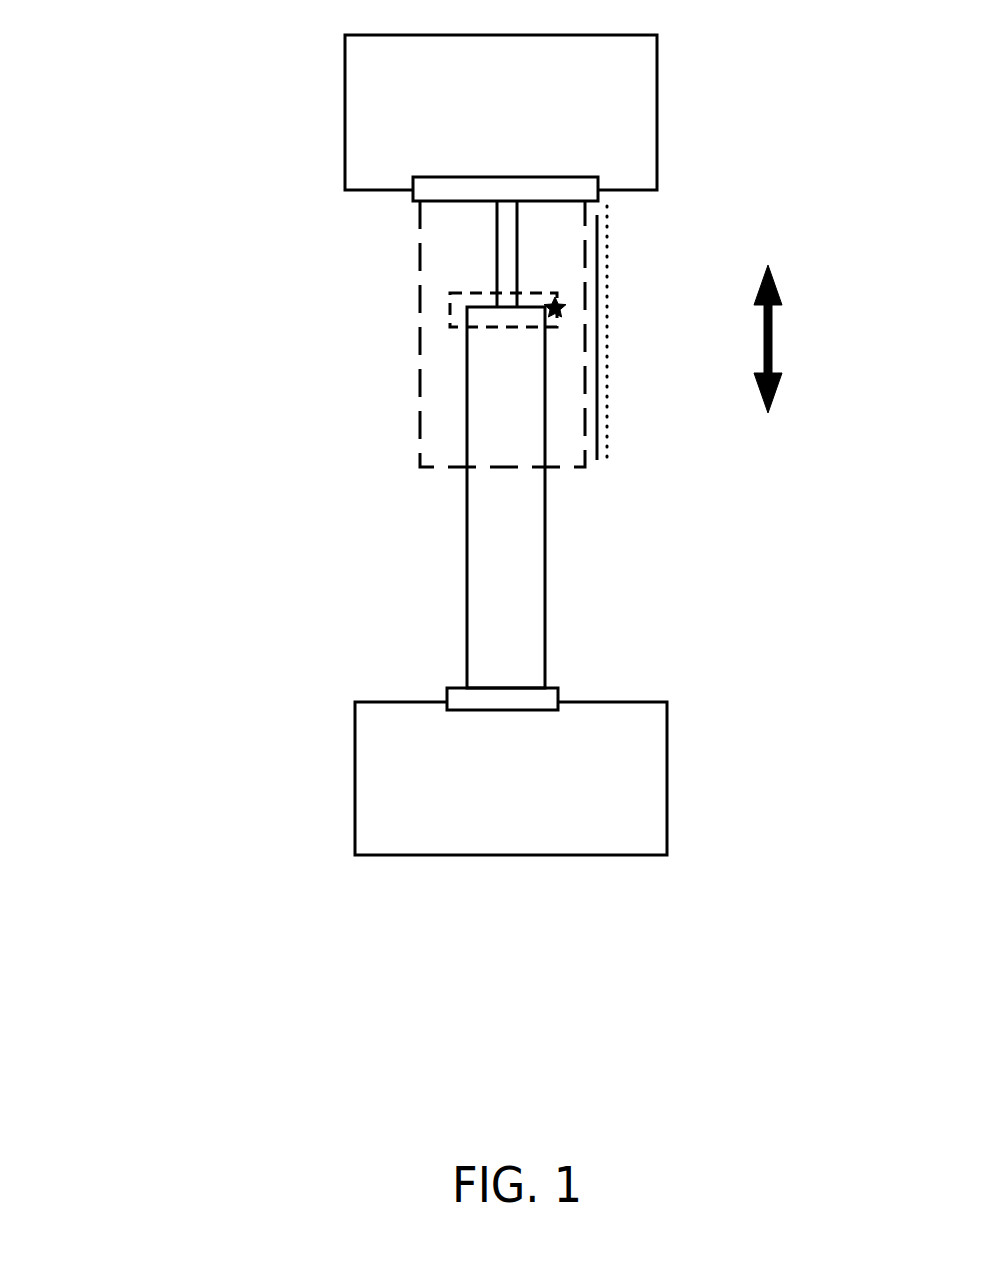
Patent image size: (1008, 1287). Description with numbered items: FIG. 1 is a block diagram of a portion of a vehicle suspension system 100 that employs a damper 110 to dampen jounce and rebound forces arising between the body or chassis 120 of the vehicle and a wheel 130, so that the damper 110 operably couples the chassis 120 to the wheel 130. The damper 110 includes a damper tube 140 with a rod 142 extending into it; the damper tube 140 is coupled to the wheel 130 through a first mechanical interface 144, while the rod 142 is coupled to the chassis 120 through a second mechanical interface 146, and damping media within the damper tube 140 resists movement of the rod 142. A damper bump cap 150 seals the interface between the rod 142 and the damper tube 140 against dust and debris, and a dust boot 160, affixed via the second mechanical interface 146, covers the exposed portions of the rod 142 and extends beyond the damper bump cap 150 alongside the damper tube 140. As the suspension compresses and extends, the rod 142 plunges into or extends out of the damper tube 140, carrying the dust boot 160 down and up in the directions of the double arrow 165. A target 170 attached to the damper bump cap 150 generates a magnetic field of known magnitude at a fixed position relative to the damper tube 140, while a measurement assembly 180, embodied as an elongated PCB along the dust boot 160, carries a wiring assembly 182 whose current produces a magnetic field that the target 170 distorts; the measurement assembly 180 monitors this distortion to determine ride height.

The vehicle suspension system 100 is at (186, 967).
The damper 110 is at (415, 512).
The body or chassis 120 is at (657, 123).
The wheel 130 is at (667, 785).
The damper tube 140 is at (547, 633).
The rod 142 is at (500, 235).
The first mechanical interface 144 is at (558, 695).
The second mechanical interface 146 is at (543, 177).
The damper bump cap 150 is at (450, 327).
The dust boot 160 is at (418, 397).
The double arrow 165 is at (772, 323).
The target 170 is at (562, 302).
The measurement assembly 180 is at (608, 335).
The wiring assembly 182 is at (598, 412).